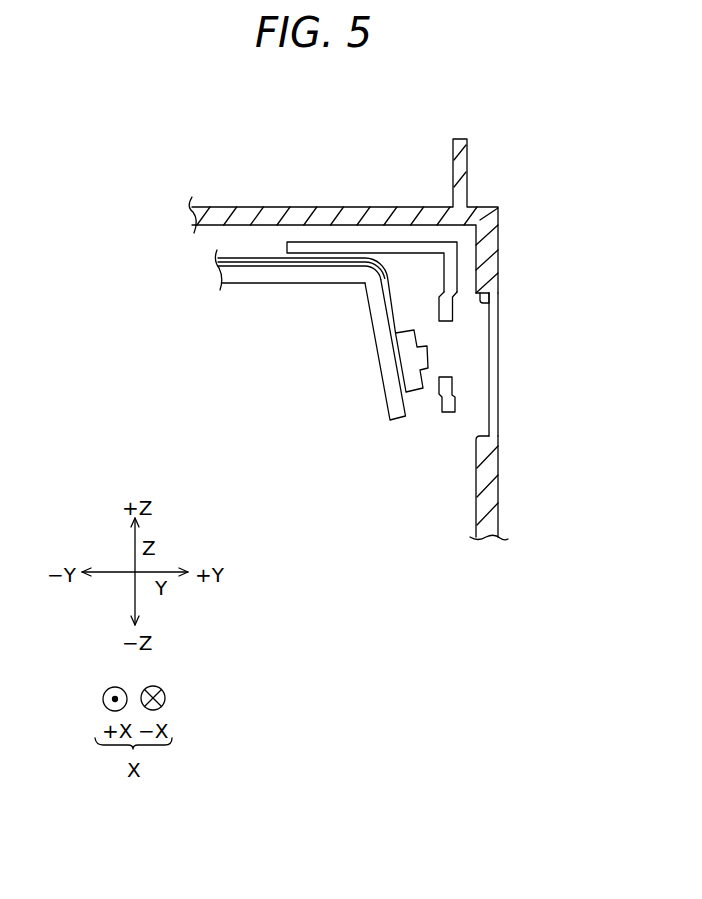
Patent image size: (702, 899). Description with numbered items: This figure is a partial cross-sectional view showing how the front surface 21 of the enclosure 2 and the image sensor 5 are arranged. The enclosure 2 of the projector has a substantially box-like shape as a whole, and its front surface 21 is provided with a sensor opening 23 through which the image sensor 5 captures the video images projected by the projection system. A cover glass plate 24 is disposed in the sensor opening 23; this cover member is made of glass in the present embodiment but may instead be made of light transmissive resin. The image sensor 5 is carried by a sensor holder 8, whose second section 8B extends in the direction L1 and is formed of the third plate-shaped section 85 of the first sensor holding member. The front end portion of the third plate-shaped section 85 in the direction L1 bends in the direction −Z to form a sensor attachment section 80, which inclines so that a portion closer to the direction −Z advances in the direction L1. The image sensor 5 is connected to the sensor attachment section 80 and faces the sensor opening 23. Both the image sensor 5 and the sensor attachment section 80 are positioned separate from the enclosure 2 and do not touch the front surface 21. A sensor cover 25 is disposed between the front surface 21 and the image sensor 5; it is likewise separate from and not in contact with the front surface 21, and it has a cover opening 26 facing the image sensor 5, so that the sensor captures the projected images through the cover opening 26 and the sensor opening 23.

The enclosure 2 is at (499, 193).
The front surface 21 is at (499, 458).
The sensor opening 23 is at (490, 297).
The cover glass plate 24 is at (498, 377).
The sensor cover 25 is at (458, 268).
The cover opening 26 is at (445, 322).
The image sensor 5 is at (412, 387).
The plate 8 is at (279, 349).
The second section 8B is at (263, 272).
The sensor attachment section 80 is at (388, 380).
The third plate-shaped section 85 is at (306, 272).